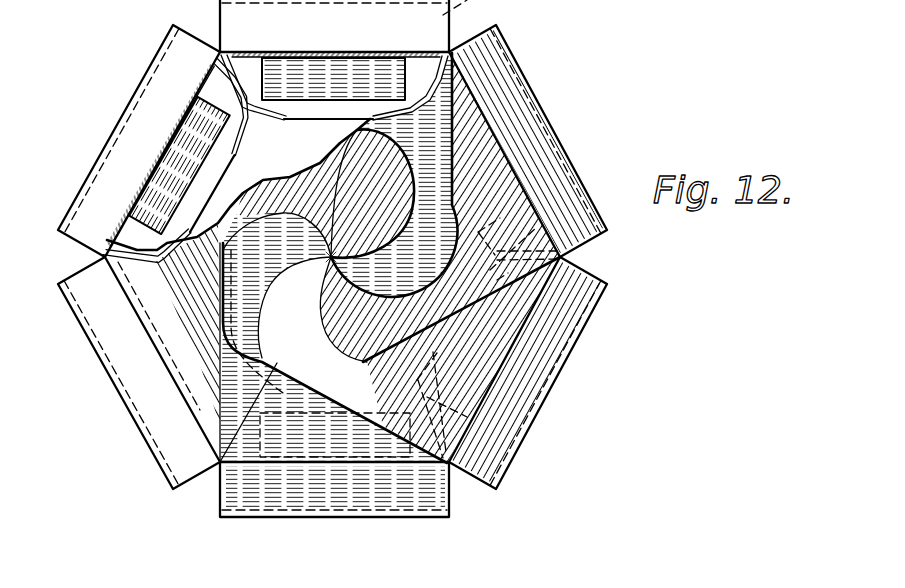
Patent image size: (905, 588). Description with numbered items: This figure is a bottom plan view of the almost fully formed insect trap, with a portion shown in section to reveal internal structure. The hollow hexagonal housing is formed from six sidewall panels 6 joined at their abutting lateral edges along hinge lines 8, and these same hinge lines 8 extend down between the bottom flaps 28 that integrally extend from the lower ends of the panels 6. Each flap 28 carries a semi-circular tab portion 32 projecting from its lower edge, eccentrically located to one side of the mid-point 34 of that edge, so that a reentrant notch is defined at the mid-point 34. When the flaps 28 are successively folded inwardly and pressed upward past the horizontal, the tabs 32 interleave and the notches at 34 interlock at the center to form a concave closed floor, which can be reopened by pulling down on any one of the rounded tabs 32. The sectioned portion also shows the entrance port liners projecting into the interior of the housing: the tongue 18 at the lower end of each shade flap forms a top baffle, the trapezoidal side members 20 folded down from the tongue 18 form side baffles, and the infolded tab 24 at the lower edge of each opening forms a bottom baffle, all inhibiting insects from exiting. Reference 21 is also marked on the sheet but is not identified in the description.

The panel 6 is at (145, 175).
The hinge line 8 is at (453, 133).
The tongue 18 is at (137, 97).
The side member 20 is at (284, 112).
The edge 21 is at (840, 5).
The tab 24 is at (307, 77).
The flap 28 is at (520, 230).
The semi-circular tab portion 32 is at (330, 210).
The mid-point 34 is at (330, 258).